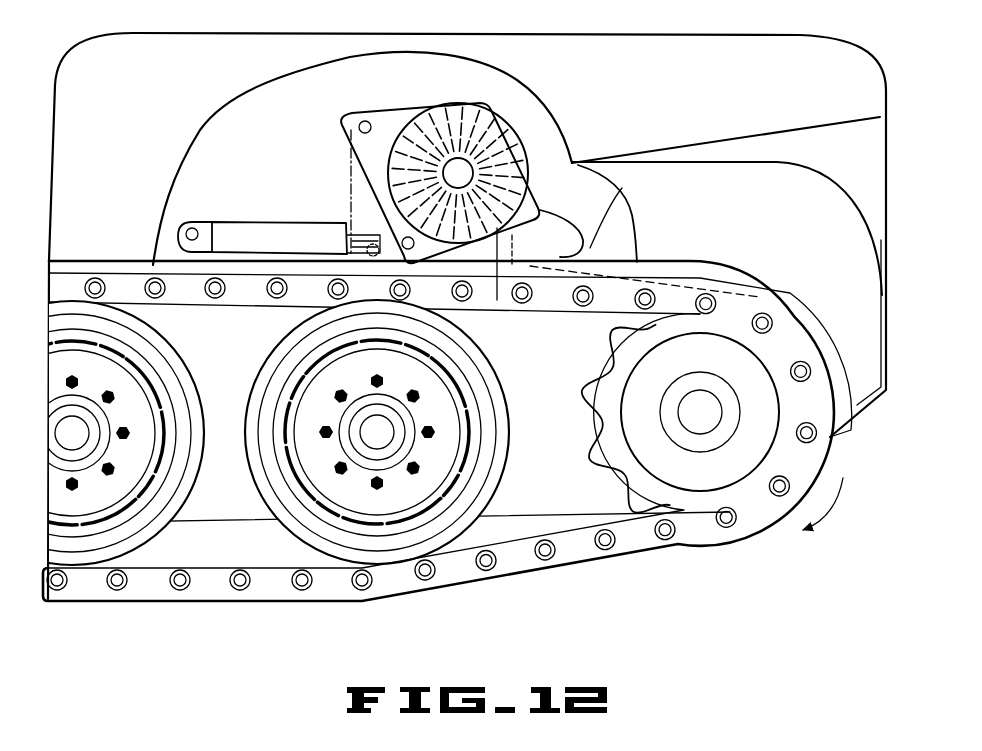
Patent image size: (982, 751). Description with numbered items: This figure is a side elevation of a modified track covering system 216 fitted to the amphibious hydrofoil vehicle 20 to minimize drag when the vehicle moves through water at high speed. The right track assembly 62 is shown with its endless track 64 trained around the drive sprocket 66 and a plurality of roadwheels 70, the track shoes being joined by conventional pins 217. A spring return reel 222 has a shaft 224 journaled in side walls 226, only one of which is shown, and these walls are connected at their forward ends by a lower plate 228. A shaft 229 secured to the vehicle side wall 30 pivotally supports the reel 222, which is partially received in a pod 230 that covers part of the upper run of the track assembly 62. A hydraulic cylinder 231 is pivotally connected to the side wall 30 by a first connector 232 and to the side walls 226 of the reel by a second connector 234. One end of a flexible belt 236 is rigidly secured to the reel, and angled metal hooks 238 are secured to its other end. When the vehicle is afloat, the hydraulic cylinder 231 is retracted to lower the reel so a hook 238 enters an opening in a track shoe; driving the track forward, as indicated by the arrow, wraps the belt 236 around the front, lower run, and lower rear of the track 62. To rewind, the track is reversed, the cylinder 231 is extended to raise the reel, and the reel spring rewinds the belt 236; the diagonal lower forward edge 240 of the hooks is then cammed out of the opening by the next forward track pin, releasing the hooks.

The amphibious hydrofoil vehicle 20 is at (800, 29).
The side wall 30 is at (130, 89).
The right track assembly 62 is at (788, 300).
The endless track 64 is at (692, 545).
The drive sprocket 66 is at (643, 484).
The roadwheels 70 is at (268, 350).
The track covering system 216 is at (545, 139).
The pins 217 is at (155, 286).
The spring return reel 222 is at (528, 111).
The shaft 224 is at (460, 160).
The side walls 226 is at (396, 110).
The lower plate 228 is at (487, 305).
The shaft 229 is at (350, 110).
The pod 230 is at (263, 157).
The hydraulic cylinder 231 is at (262, 222).
The first connector 232 is at (188, 232).
The second connector 234 is at (352, 213).
The flexible belt 236 is at (565, 209).
The angled metal hooks 238 is at (622, 188).
The diagonal lower forward edge 240 is at (628, 250).